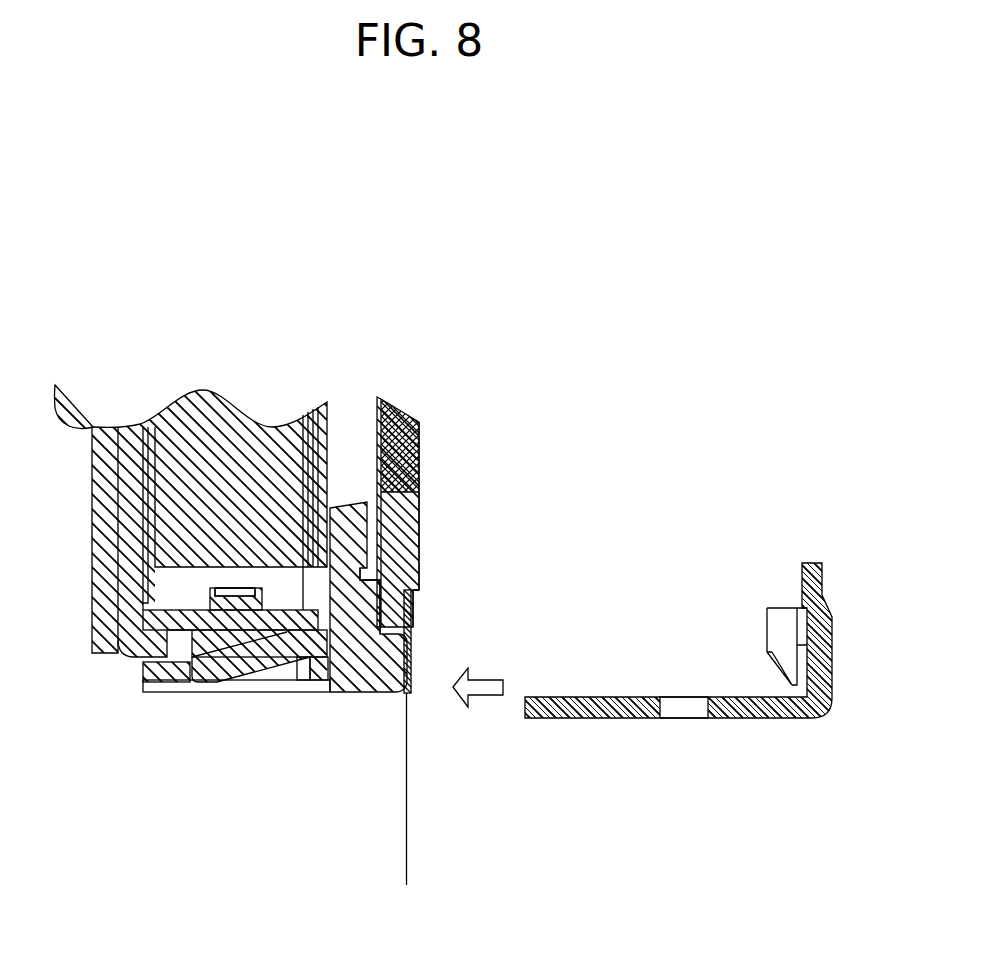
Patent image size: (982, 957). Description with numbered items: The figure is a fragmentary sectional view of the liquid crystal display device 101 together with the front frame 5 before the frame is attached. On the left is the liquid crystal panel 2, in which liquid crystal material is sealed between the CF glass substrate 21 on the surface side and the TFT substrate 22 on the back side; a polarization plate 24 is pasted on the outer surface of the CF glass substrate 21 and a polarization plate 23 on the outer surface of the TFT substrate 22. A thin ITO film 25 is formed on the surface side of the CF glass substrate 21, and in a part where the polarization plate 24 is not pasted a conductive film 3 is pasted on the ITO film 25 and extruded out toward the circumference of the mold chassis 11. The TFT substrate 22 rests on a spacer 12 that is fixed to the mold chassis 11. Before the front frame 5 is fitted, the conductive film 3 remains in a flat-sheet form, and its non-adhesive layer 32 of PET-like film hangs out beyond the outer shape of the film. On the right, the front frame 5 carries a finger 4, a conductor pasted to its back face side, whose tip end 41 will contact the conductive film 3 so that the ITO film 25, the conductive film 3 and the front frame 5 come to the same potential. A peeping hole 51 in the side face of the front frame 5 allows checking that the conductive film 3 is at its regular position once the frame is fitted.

The liquid crystal display device 101 is at (628, 342).
The liquid crystal panel 2 is at (460, 333).
The CF glass substrate 21 is at (400, 413).
The TFT substrate 22 is at (380, 398).
The polarization plate 23 is at (375, 412).
The polarization plate 24 is at (419, 414).
The ITO film 25 is at (412, 598).
The conductive film 3 is at (411, 643).
The non-adhesive layer 32 is at (408, 773).
The mold chassis 11 is at (373, 663).
The spacer 12 is at (376, 613).
The finger 4 is at (748, 643).
The tip end 41 is at (766, 672).
The front frame 5 is at (678, 674).
The peeping hole 51 is at (683, 720).